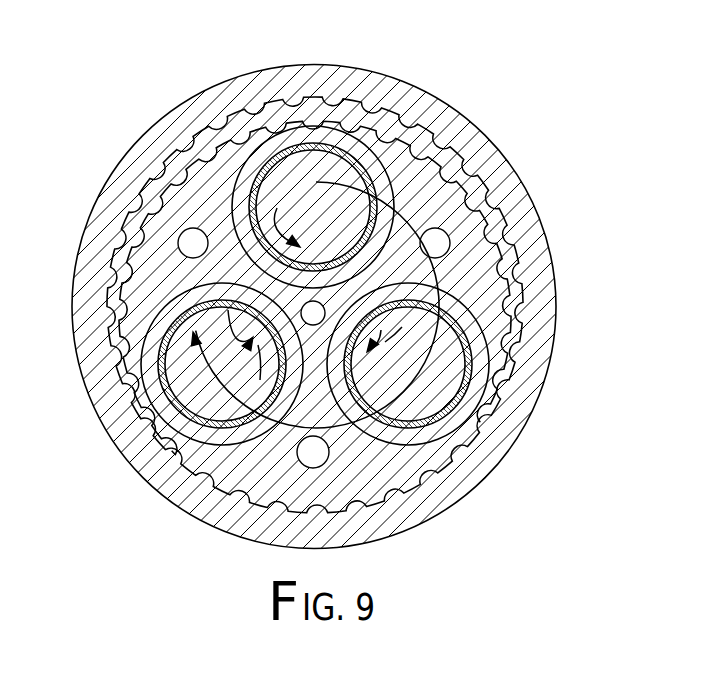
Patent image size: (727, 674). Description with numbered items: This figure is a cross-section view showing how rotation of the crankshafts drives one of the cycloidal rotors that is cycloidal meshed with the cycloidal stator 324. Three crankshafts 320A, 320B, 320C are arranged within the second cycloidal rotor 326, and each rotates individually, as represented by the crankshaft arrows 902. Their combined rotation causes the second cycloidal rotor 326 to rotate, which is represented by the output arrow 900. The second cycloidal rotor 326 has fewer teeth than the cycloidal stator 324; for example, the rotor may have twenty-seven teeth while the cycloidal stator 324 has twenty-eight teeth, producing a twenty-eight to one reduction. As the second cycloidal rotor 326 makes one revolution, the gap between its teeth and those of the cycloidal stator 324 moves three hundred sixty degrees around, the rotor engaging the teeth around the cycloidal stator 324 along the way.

The cycloidal stator 324 is at (437, 98).
The second cycloidal rotor 326 is at (438, 138).
The output arrow 900 is at (407, 218).
The crankshaft arrows 902 is at (276, 230).
The crankshaft 320A is at (458, 398).
The crankshaft 320B is at (315, 150).
The crankshaft 320C is at (193, 425).